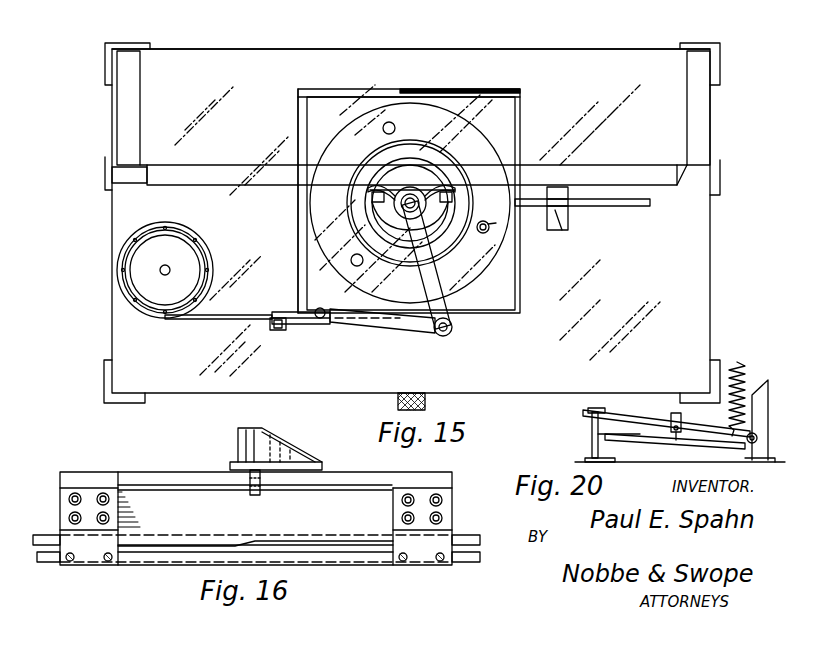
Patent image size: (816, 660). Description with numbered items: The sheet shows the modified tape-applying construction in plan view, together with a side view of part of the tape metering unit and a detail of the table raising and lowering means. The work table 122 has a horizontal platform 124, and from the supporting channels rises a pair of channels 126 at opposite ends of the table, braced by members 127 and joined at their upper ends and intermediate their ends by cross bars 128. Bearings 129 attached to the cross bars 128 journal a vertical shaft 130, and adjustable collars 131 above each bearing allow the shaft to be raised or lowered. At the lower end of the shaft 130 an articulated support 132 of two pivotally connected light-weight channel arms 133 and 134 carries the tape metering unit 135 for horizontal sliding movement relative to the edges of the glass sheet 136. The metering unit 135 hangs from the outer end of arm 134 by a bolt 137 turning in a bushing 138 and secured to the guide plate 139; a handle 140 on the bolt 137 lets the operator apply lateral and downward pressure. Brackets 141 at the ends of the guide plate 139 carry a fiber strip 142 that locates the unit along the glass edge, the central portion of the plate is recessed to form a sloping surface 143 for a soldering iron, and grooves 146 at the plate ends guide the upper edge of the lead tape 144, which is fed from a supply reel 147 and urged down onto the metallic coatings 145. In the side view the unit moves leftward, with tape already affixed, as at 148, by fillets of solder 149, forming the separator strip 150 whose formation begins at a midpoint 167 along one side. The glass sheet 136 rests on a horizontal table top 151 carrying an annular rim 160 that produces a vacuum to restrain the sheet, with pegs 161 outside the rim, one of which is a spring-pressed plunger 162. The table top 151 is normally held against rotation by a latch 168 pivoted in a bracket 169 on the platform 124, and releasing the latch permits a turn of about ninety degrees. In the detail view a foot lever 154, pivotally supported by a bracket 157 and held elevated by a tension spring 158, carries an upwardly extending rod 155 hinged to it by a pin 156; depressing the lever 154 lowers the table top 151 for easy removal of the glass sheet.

In FIG. 15, the work table 122 is at (346, 46).
In FIG. 20, the work table 122 is at (767, 401).
In FIG. 15, the horizontal platform 124 is at (408, 68).
In FIG. 15, the channels 126 is at (146, 163).
In FIG. 15, the bracing members 127 is at (118, 120).
In FIG. 15, the cross bars 128 is at (248, 176).
In FIG. 15, the bearings 129 is at (392, 190).
In FIG. 15, the vertical shaft 130 is at (408, 194).
In FIG. 15, the adjustable collars 131 is at (426, 196).
In FIG. 15, the articulated support 132 is at (456, 337).
In FIG. 15, the arm 133 is at (440, 290).
In FIG. 15, the arm 134 is at (392, 322).
In FIG. 16, the arm 134 is at (303, 462).
In FIG. 15, the tape metering unit 135 is at (306, 330).
In FIG. 16, the tape metering unit 135 is at (161, 474).
In FIG. 15, the glass sheet 136 is at (340, 102).
In FIG. 16, the glass sheet 136 is at (465, 556).
In FIG. 16, the bolt 137 is at (268, 440).
In FIG. 16, the bushing 138 is at (284, 443).
In FIG. 15, the guide plate 139 is at (272, 330).
In FIG. 16, the guide plate 139 is at (119, 482).
In FIG. 15, the handle 140 is at (321, 309).
In FIG. 15, the brackets 141 is at (281, 330).
In FIG. 16, the brackets 141 is at (88, 562).
In FIG. 15, the fiber strip 142 is at (318, 326).
In FIG. 16, the fiber strip 142 is at (195, 560).
In FIG. 16, the sloping surface 143 is at (291, 517).
In FIG. 15, the lead tape 144 is at (268, 313).
In FIG. 16, the lead tape 144 is at (62, 537).
In FIG. 15, the metallic coatings 145 is at (323, 90).
In FIG. 16, the grooves 146 is at (60, 514).
In FIG. 15, the supply reel 147 is at (140, 270).
In FIG. 16, the affixed tape portion 148 is at (302, 541).
In FIG. 16, the fillets of solder 149 is at (470, 542).
In FIG. 15, the separator strip 150 is at (513, 89).
In FIG. 15, the table top 151 is at (490, 244).
In FIG. 15, the foot lever 154 is at (398, 404).
In FIG. 20, the foot lever 154 is at (585, 413).
In FIG. 20, the rod 155 is at (681, 418).
In FIG. 20, the pin 156 is at (676, 440).
In FIG. 20, the bracket 157 is at (758, 441).
In FIG. 20, the tension spring 158 is at (745, 368).
In FIG. 15, the annular rim 160 is at (443, 152).
In FIG. 15, the pegs 161 is at (384, 132).
In FIG. 15, the spring-pressed plunger 162 is at (488, 229).
In FIG. 15, the starting point 167 is at (413, 92).
In FIG. 15, the latch 168 is at (642, 206).
In FIG. 15, the bracket 169 is at (558, 218).